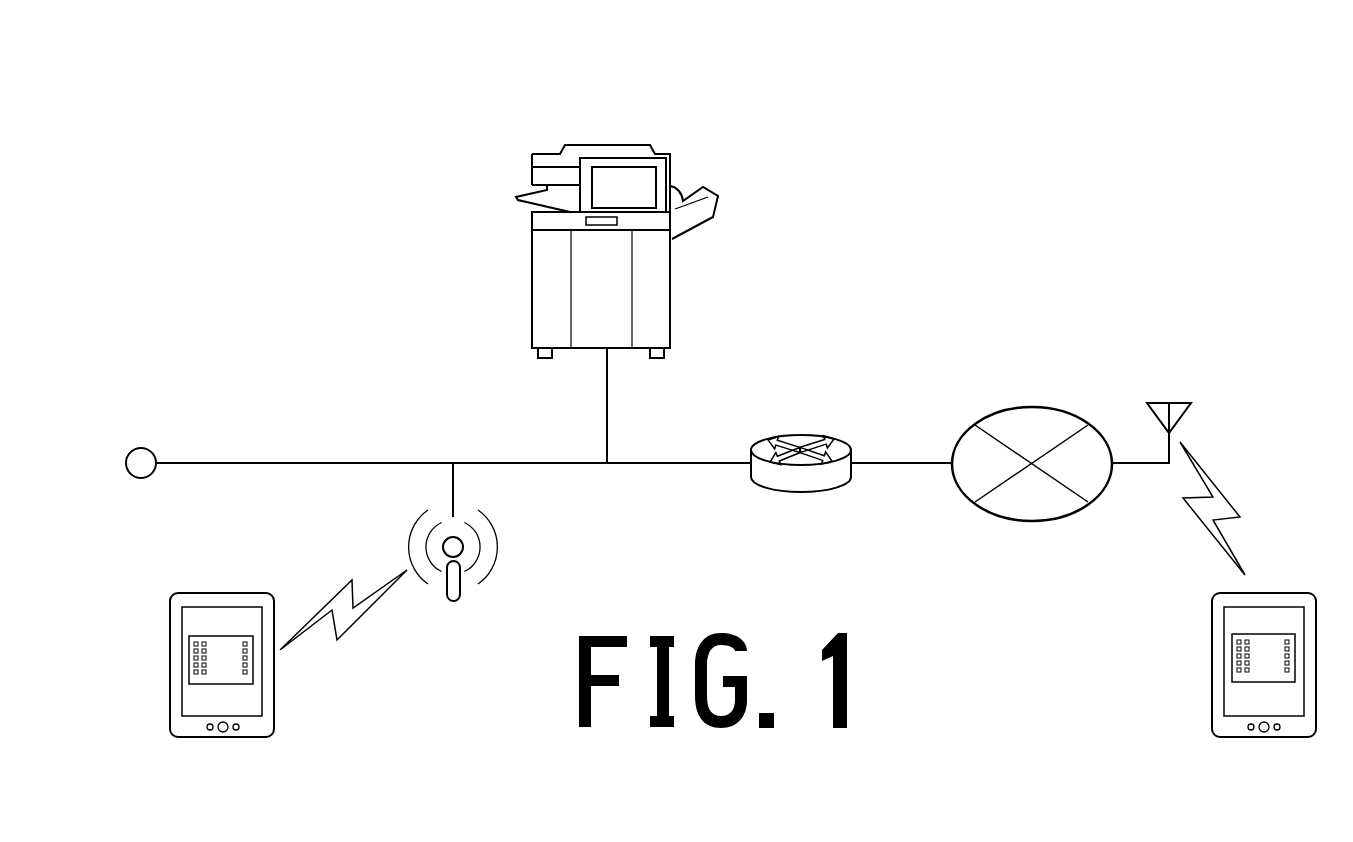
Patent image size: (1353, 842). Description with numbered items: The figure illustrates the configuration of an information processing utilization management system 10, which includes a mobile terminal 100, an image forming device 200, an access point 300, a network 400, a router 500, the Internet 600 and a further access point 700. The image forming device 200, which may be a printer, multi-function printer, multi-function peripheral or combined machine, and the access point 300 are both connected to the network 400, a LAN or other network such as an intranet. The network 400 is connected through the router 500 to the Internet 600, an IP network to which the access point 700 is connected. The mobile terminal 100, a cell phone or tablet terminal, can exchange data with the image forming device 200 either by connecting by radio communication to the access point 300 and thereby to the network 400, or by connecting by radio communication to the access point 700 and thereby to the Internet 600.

The information processing utilization management system 10 is at (738, 77).
The mobile terminal 100 is at (240, 592).
The image forming device 200 is at (612, 146).
The access point 300 is at (478, 513).
The network 400 is at (687, 461).
The router 500 is at (810, 436).
The Internet 600 is at (1035, 406).
The access point 700 is at (1178, 402).